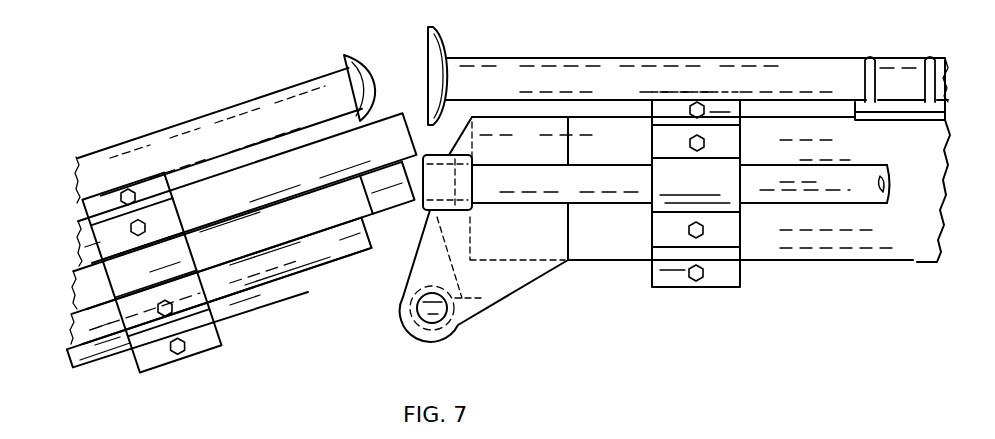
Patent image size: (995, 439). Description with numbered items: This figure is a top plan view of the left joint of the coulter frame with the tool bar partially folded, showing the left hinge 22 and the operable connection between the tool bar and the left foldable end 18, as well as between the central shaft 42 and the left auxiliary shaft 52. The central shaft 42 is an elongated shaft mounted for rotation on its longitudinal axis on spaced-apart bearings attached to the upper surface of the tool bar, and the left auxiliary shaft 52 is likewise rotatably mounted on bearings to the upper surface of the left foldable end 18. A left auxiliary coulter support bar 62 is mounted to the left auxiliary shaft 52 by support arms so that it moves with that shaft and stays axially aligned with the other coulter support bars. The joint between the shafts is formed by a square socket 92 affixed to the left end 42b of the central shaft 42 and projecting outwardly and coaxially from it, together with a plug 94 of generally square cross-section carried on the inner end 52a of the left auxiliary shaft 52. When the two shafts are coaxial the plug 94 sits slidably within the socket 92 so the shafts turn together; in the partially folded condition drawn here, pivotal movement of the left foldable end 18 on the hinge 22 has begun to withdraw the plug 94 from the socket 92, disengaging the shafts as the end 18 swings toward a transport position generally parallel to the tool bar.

The left foldable end 18 is at (285, 185).
The left hinge 22 is at (443, 313).
The central shaft 42 is at (812, 190).
The left end of shaft 42b is at (517, 182).
The left auxiliary shaft 52 is at (95, 283).
The inner end of left auxiliary shaft 52a is at (230, 235).
The left auxiliary coulter support bar 62 is at (225, 308).
The square socket 92 is at (440, 164).
The plug 94 is at (392, 197).